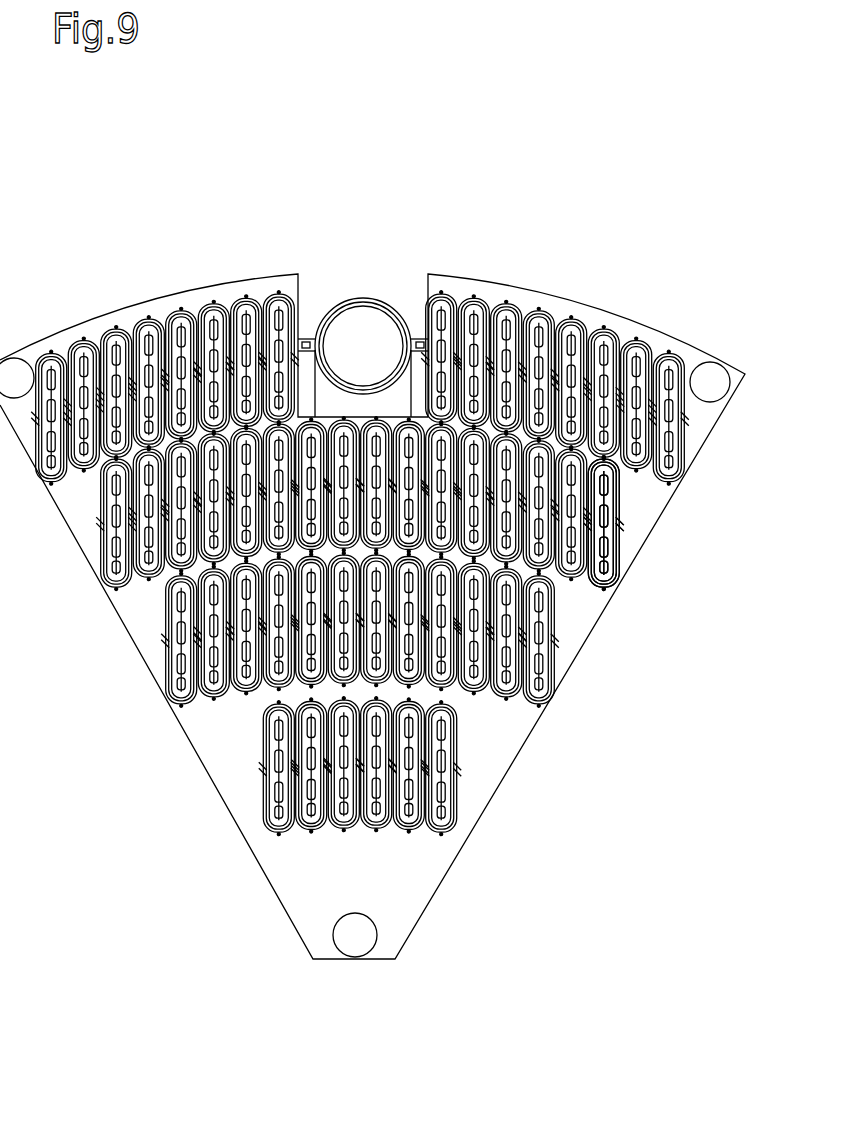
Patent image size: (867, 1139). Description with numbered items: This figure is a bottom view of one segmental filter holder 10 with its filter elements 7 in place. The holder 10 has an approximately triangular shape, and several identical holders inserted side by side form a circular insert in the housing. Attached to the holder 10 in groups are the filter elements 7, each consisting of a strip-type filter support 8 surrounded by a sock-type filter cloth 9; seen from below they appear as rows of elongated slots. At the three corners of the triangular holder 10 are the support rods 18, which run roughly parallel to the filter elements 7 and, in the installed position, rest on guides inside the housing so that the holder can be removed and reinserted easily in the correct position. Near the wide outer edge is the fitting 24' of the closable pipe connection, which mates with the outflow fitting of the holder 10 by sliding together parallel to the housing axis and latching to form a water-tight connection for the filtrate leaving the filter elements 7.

The filter element 7 is at (404, 429).
The strip-type filter support 8 is at (610, 582).
The sock-type filter cloth 9 is at (664, 470).
The segmental filter holder 10 is at (223, 903).
The support rod 18 is at (14, 372).
The fitting 24' is at (365, 314).